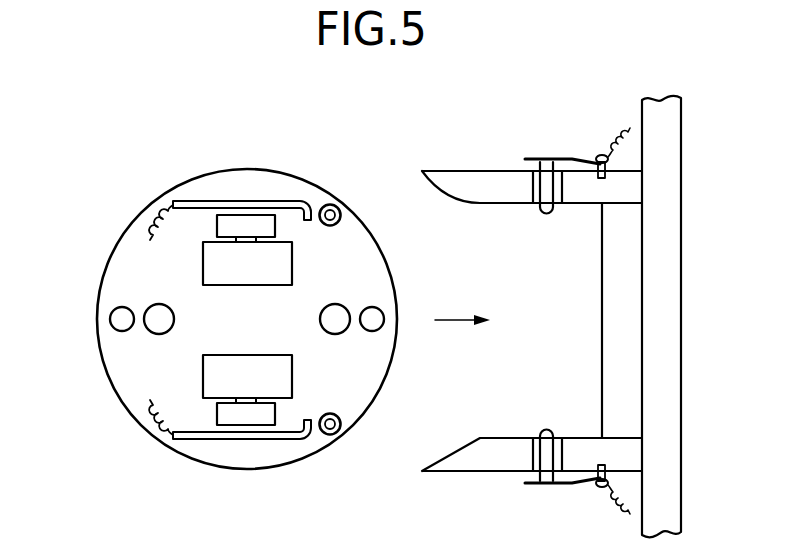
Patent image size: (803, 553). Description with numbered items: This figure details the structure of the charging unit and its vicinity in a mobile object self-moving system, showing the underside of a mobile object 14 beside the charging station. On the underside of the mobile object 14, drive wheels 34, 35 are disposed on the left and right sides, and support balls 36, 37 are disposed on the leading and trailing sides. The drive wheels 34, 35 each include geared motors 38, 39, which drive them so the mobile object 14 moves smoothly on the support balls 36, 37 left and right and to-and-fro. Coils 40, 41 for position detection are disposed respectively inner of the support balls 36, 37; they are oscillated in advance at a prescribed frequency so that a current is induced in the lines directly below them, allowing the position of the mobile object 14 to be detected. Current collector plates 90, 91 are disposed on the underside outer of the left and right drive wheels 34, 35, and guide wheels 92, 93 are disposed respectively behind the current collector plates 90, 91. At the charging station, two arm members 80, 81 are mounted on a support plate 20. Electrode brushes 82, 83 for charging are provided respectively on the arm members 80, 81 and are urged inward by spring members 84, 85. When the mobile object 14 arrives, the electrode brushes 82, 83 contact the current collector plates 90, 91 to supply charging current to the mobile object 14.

The mobile object 14 is at (88, 353).
The support plate 20 is at (670, 140).
The drive wheel 34 is at (227, 418).
The drive wheel 35 is at (229, 222).
The support ball 36 is at (116, 307).
The support ball 37 is at (380, 309).
The geared motor 38 is at (264, 385).
The geared motor 39 is at (268, 262).
The coil 40 is at (152, 306).
The coil 41 is at (346, 307).
The arm member 80 is at (475, 462).
The arm member 81 is at (455, 175).
The electrode brush 82 is at (548, 434).
The electrode brush 83 is at (547, 213).
The spring member 84 is at (585, 486).
The spring member 85 is at (578, 162).
The current collector plate 90 is at (185, 441).
The current collector plate 91 is at (178, 200).
The guide wheel 92 is at (331, 436).
The guide wheel 93 is at (328, 203).